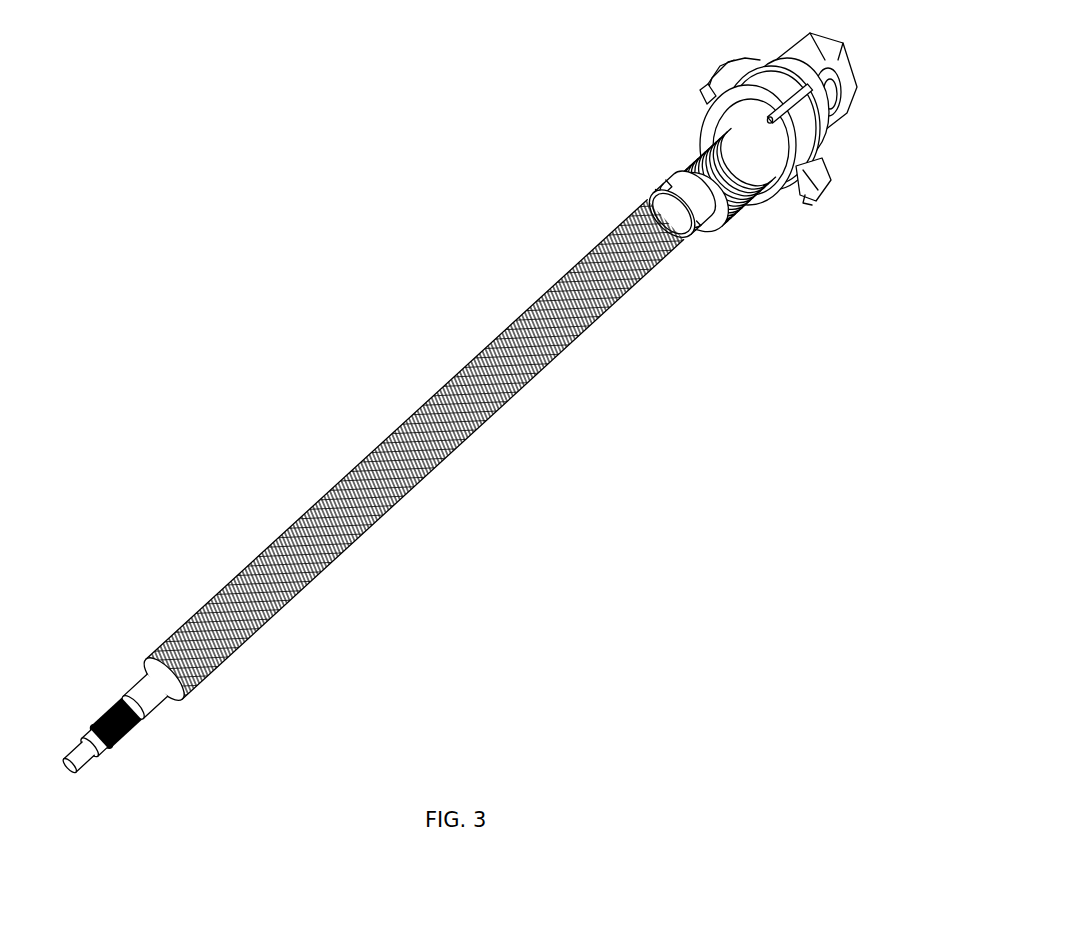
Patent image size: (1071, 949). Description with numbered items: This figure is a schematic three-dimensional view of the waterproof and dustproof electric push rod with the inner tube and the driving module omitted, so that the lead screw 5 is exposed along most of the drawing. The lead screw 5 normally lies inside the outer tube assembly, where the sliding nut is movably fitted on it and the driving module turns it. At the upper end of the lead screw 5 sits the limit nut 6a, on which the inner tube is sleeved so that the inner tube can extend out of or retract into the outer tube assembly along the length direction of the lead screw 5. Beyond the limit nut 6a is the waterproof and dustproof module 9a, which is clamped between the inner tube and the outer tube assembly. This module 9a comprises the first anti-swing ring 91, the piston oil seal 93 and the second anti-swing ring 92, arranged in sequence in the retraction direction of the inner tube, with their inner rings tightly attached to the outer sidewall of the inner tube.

The lead screw 5 is at (405, 430).
The limit nut 6a is at (655, 185).
The waterproof and dustproof module 9a is at (770, 190).
The first anti-swing ring 91 is at (818, 188).
The second anti-swing ring 92 is at (700, 98).
The piston oil seal 93 is at (799, 197).